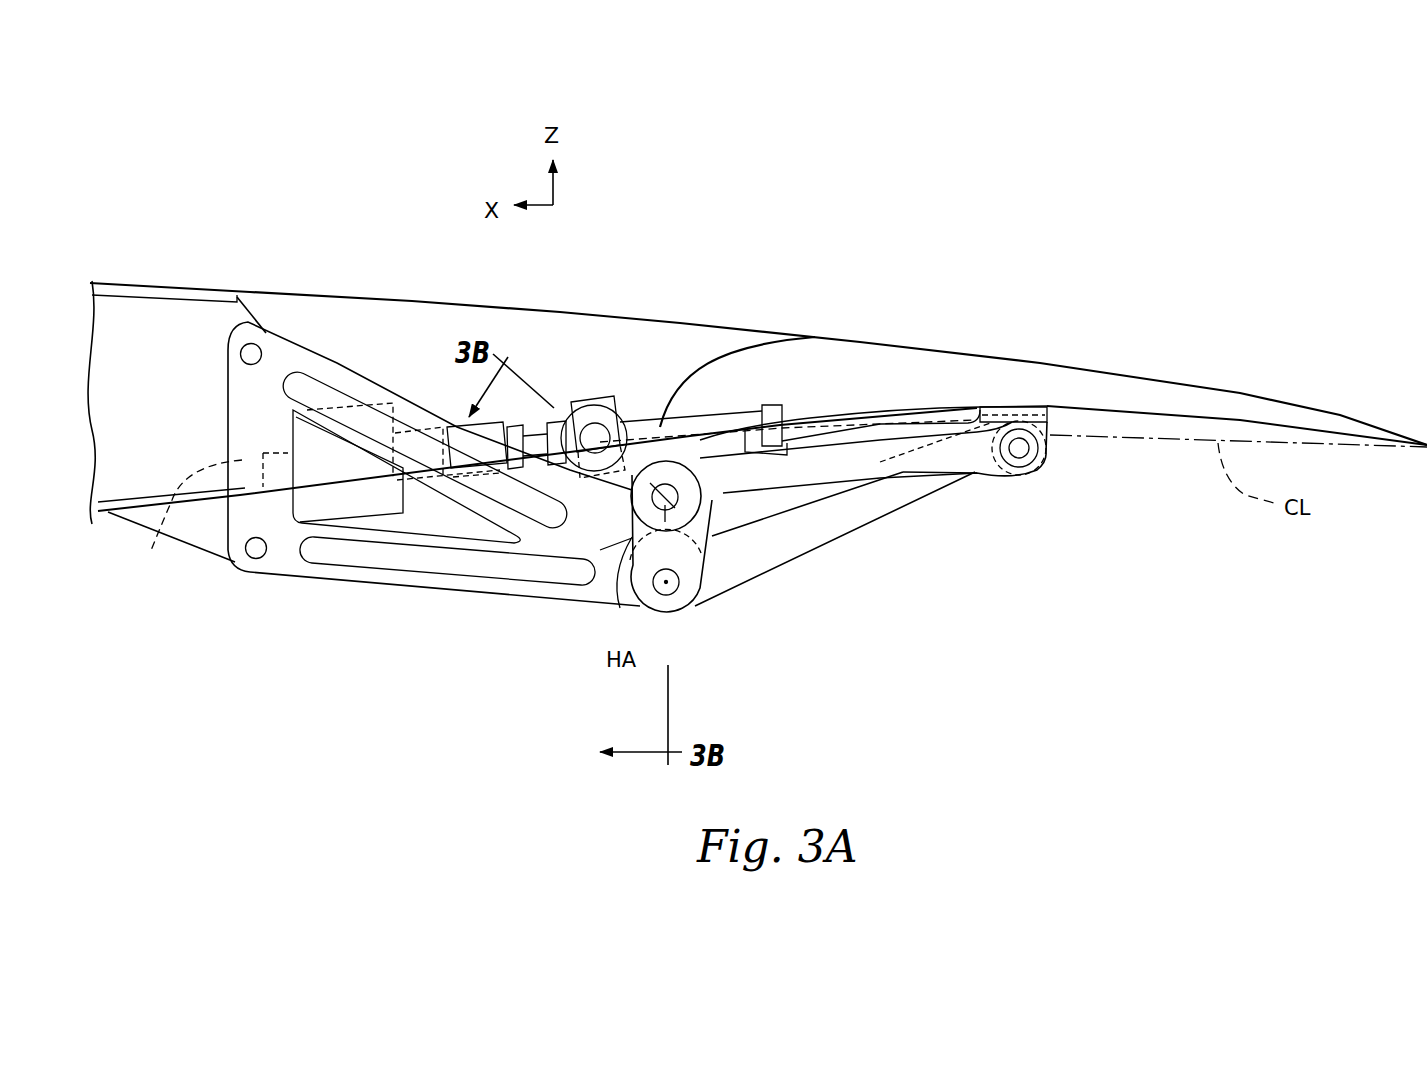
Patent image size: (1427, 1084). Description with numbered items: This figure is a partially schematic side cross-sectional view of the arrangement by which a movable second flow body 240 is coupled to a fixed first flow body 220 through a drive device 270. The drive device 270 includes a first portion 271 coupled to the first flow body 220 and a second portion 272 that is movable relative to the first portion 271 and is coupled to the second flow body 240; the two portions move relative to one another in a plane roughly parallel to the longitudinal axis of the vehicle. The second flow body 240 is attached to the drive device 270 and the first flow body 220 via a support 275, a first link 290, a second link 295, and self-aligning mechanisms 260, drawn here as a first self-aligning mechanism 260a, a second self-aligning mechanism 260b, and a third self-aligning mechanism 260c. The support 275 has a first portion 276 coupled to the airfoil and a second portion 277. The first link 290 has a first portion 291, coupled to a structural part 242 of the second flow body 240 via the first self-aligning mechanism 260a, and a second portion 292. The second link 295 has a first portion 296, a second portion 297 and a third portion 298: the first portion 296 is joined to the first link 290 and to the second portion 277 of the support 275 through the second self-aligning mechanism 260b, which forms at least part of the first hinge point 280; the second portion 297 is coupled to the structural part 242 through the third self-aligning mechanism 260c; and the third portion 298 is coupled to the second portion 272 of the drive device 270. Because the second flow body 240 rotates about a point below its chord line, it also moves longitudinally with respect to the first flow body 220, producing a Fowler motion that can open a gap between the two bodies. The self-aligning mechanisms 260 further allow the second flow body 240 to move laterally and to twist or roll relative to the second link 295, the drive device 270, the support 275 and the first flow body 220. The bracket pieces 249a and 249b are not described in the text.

The first flow body 220 is at (150, 338).
The second flow body 240 is at (880, 355).
The structural part 242 is at (840, 470).
The flap attachment bracket 249a is at (1013, 410).
The flap cove strap 249b is at (722, 426).
The self-aligning mechanism 260 is at (860, 615).
The first self-aligning mechanism 260a is at (1048, 476).
The second self-aligning mechanism 260b is at (700, 610).
The third self-aligning mechanism 260c is at (713, 513).
The drive device 270 is at (653, 366).
The first portion of the drive device 271 is at (467, 423).
The second portion of the drive device 272 is at (613, 413).
The support 275 is at (374, 489).
The first portion of the support 276 is at (255, 503).
The second portion of the support 277 is at (590, 595).
The first hinge point 280 is at (667, 632).
The first link 290 is at (871, 553).
The first portion of the first link 291 is at (980, 485).
The second portion of the first link 292 is at (716, 577).
The second link 295 is at (657, 398).
The first portion of the second link 296 is at (630, 575).
The second portion of the second link 297 is at (730, 418).
The third portion of the second link 298 is at (590, 413).